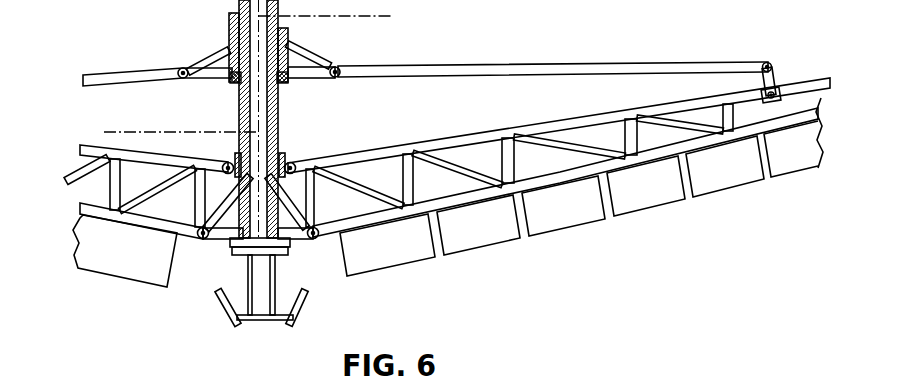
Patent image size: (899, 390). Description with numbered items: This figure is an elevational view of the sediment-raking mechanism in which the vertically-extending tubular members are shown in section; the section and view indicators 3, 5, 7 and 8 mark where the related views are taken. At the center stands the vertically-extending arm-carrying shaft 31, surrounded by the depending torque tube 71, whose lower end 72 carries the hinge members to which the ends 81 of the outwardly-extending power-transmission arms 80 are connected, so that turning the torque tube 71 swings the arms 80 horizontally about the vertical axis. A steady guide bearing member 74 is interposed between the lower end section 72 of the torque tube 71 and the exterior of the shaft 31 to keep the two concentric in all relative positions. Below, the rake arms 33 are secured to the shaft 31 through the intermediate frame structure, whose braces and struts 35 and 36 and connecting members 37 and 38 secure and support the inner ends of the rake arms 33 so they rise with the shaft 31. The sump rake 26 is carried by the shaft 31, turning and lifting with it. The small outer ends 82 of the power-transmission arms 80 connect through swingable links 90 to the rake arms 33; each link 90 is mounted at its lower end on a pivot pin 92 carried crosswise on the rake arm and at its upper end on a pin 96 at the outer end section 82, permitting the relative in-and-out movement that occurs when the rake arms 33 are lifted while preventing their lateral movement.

The sump rake 26 is at (300, 309).
The arm-carrying shaft 31 is at (278, 5).
The rake arms 33 is at (423, 137).
The braces and struts 35 is at (197, 80).
The braces and struts 36 is at (300, 48).
The connecting members 37 is at (314, 243).
The connecting members 38 is at (285, 158).
The torque tube 71 is at (228, 25).
The lower end of torque tube 72 is at (288, 82).
The steady guide bearing member 74 is at (236, 84).
The power-transmission arms 80 is at (626, 64).
The ends of power-transmission arms 81 is at (338, 80).
The outer ends of power-transmission arms 82 is at (769, 60).
The swingable links 90 is at (777, 80).
The pivot pin 92 is at (773, 103).
The pin 96 is at (798, 75).
The section line 3- 3 is at (377, 0).
The section line 5- 5 is at (131, 106).
The view arrow 7 is at (344, 296).
The view arrow 8 is at (375, 48).